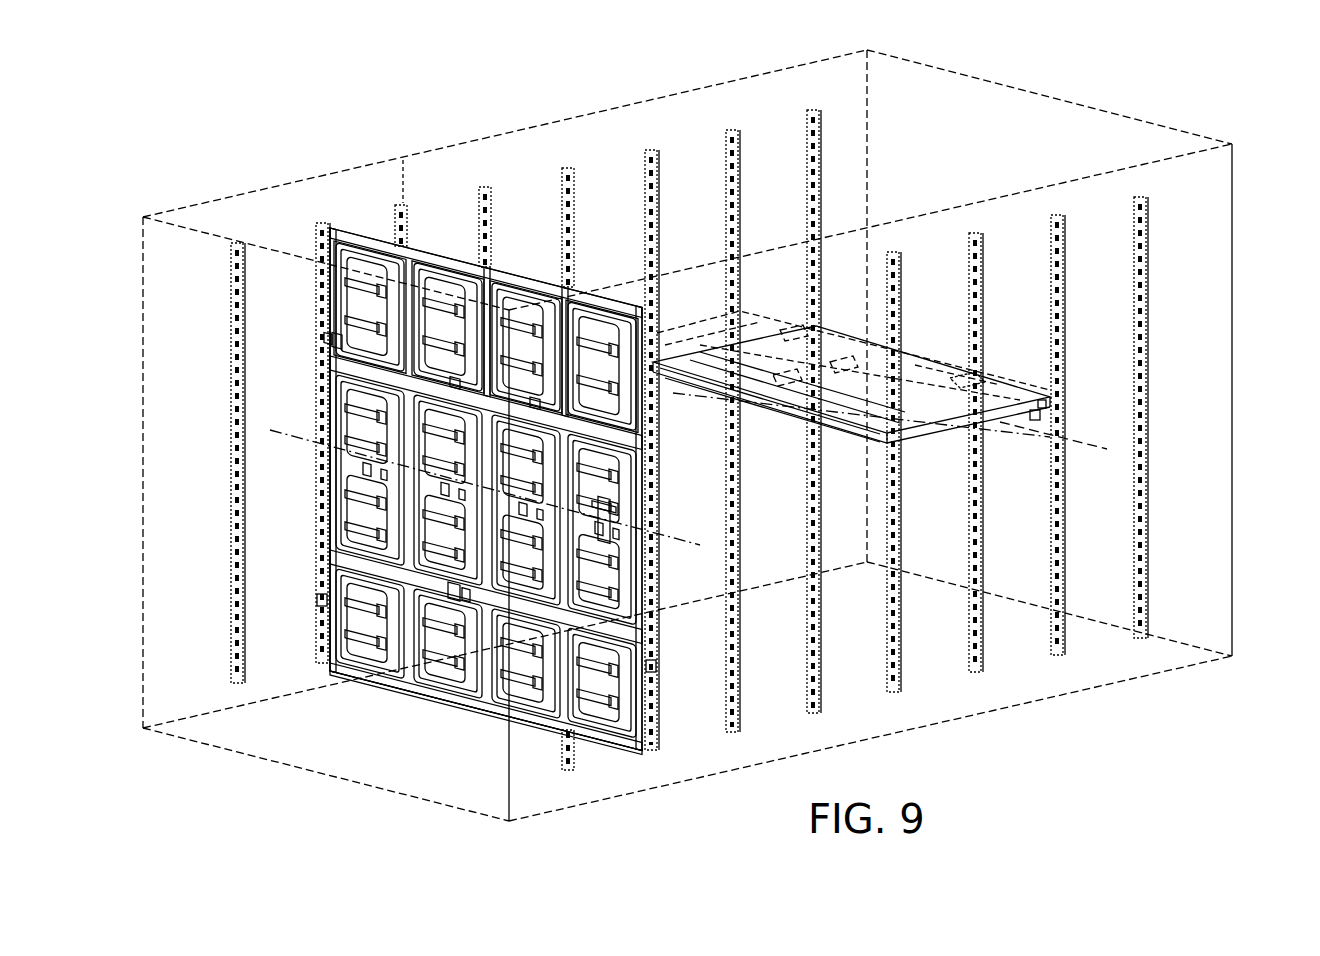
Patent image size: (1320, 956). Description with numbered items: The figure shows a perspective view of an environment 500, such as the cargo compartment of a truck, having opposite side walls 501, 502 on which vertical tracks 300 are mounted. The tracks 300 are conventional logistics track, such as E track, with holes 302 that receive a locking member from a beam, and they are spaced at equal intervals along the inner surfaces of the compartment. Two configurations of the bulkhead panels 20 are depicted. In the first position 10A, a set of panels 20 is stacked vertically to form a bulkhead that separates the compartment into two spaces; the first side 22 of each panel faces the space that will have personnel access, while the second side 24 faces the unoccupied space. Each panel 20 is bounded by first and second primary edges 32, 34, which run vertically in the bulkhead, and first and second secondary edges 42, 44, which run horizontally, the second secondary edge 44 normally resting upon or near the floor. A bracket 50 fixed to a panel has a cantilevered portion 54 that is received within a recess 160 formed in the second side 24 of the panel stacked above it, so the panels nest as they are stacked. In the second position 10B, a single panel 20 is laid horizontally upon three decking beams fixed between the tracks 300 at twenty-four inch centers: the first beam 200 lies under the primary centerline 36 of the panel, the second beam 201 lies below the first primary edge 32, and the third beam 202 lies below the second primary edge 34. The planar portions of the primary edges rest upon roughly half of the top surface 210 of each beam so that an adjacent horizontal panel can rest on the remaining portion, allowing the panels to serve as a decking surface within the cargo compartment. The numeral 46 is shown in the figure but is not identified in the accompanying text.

The environment 500 is at (990, 108).
The side wall 501 is at (1212, 230).
The side wall 502 is at (668, 96).
The track 300 is at (313, 516).
The hole 302 is at (315, 600).
The primary centerline 36 is at (405, 190).
The center axis 46 is at (280, 432).
The first position of bulkhead 10A is at (650, 473).
The second position of bulkhead 10B is at (852, 379).
The first secondary edge 42 is at (430, 252).
The first beam 200 is at (355, 372).
The panel 20 is at (355, 472).
The first side 22 is at (618, 547).
The first primary edge 32 is at (455, 312).
The second primary edge 34 is at (490, 288).
The bracket 50 is at (330, 342).
The cantilevered portion 54 is at (318, 341).
The second secondary edge 44 is at (689, 324).
The second beam 201 is at (792, 423).
The top surface 210 is at (837, 424).
The third beam 202 is at (1037, 418).
The recess 160 is at (962, 380).
The second side 24 is at (756, 333).